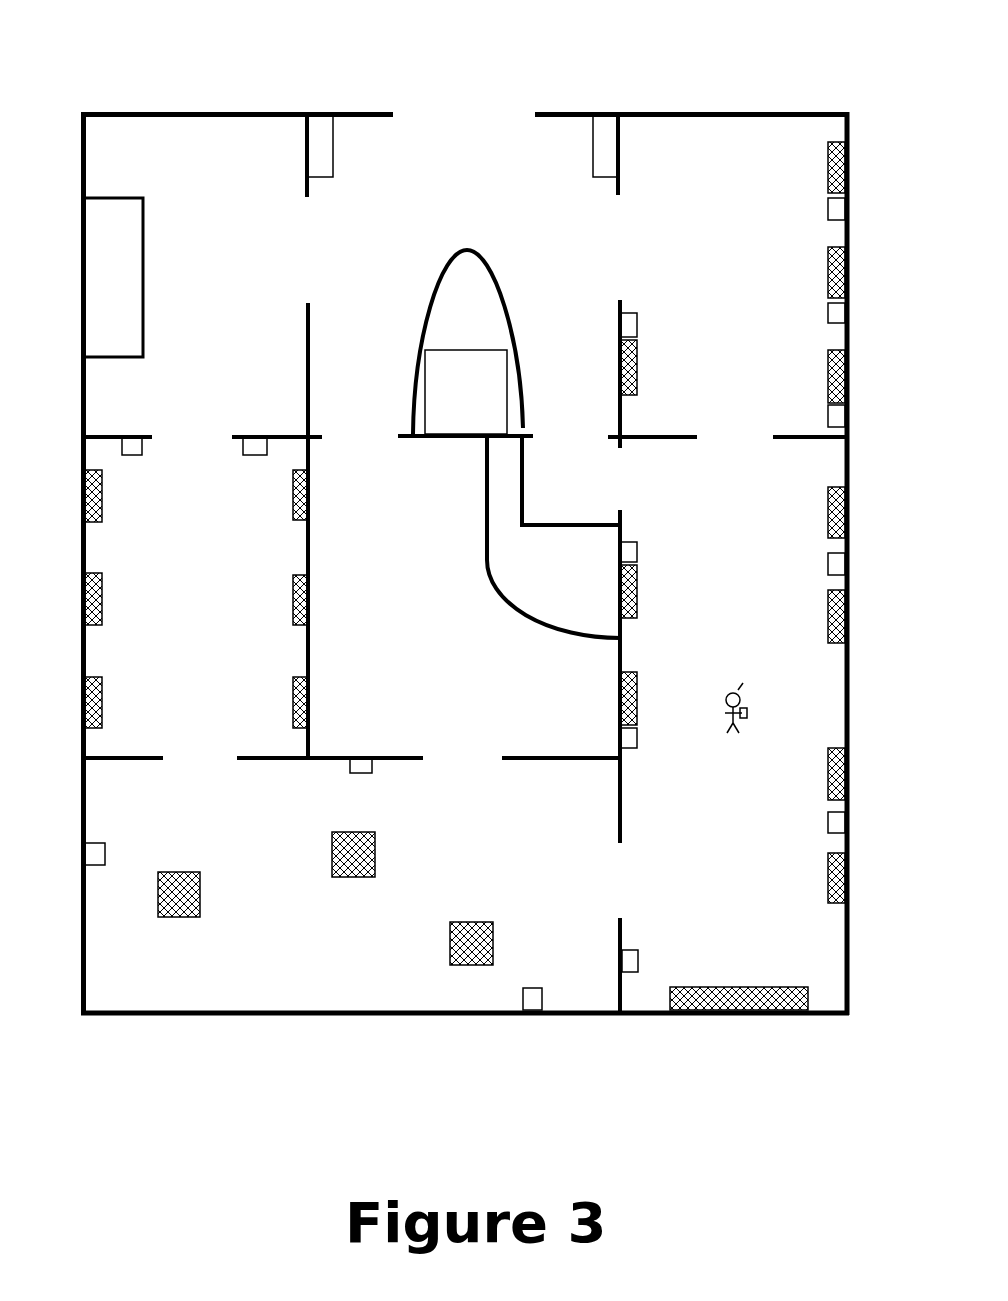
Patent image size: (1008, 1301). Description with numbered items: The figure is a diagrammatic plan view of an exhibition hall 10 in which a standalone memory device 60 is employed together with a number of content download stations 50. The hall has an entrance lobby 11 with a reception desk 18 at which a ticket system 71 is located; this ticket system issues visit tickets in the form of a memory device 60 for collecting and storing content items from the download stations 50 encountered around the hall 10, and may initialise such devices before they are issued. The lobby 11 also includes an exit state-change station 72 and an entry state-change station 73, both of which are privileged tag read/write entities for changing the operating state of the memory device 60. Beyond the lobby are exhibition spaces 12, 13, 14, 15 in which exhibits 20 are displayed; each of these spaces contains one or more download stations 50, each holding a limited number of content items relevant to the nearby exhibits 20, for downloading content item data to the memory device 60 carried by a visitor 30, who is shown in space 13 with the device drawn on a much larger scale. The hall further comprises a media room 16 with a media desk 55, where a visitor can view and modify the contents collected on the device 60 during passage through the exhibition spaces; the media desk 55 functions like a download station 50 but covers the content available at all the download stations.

The exhibition hall 10 is at (133, 82).
The entrance lobby 11 is at (473, 194).
The exhibition space 12 is at (746, 283).
The exhibition space 13 is at (728, 805).
The exhibition space 14 is at (486, 840).
The exhibition space 15 is at (205, 562).
The media room 16 is at (208, 287).
The reception desk 18 is at (437, 285).
The exhibit 20 is at (845, 168).
The visitor 30 is at (718, 716).
The content download station 50 is at (142, 453).
The media desk 55 is at (140, 330).
The memory device 60 is at (747, 712).
The ticket system 71 is at (427, 380).
The exit state-change station 72 is at (328, 153).
The entry state-change station 73 is at (607, 145).